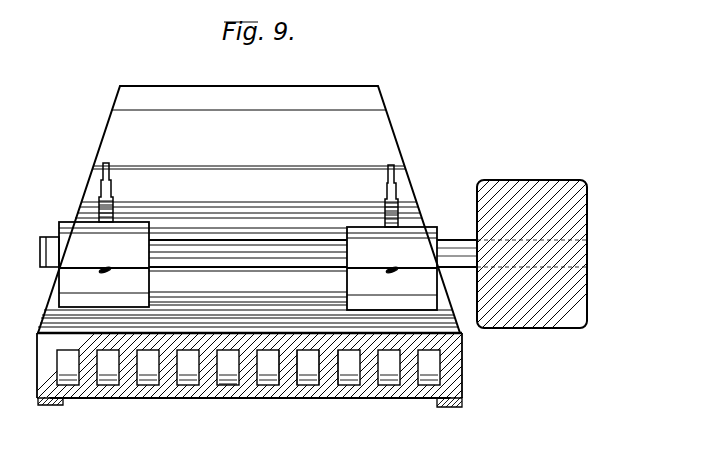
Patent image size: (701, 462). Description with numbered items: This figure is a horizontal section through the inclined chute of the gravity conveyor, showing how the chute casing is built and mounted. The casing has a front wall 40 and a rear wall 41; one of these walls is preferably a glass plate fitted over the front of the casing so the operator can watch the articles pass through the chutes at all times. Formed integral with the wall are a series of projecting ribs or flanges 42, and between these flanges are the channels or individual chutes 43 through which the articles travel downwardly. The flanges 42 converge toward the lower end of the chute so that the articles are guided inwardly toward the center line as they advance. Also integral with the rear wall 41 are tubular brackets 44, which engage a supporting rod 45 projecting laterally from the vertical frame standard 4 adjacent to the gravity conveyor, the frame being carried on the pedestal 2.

The pedestal 2 is at (409, 153).
The vertical frame standard 4 is at (578, 217).
The front wall 40 is at (268, 345).
The rear wall 41 is at (267, 375).
The projecting ribs or flanges 42 is at (343, 378).
The channels or individual chutes 43 is at (230, 380).
The tubular brackets 44 is at (128, 227).
The supporting rod 45 is at (220, 248).